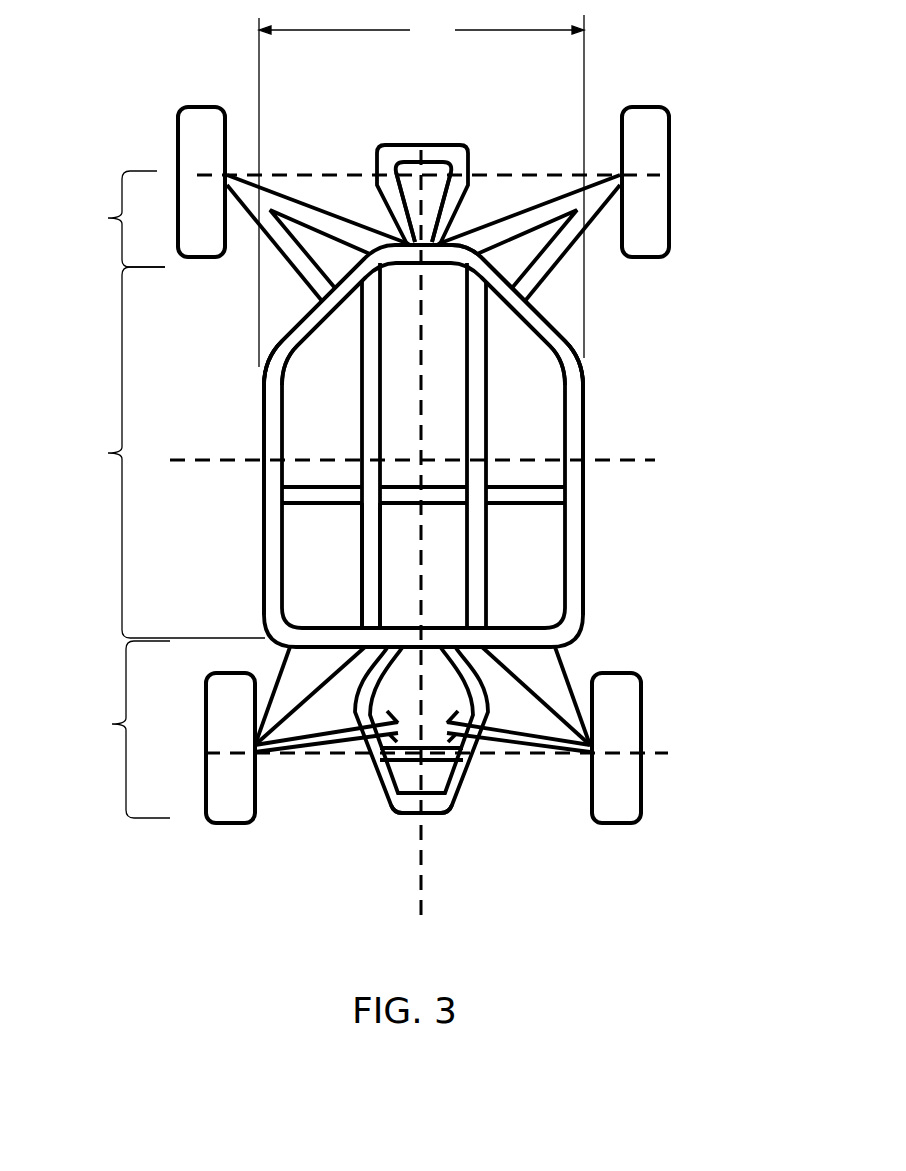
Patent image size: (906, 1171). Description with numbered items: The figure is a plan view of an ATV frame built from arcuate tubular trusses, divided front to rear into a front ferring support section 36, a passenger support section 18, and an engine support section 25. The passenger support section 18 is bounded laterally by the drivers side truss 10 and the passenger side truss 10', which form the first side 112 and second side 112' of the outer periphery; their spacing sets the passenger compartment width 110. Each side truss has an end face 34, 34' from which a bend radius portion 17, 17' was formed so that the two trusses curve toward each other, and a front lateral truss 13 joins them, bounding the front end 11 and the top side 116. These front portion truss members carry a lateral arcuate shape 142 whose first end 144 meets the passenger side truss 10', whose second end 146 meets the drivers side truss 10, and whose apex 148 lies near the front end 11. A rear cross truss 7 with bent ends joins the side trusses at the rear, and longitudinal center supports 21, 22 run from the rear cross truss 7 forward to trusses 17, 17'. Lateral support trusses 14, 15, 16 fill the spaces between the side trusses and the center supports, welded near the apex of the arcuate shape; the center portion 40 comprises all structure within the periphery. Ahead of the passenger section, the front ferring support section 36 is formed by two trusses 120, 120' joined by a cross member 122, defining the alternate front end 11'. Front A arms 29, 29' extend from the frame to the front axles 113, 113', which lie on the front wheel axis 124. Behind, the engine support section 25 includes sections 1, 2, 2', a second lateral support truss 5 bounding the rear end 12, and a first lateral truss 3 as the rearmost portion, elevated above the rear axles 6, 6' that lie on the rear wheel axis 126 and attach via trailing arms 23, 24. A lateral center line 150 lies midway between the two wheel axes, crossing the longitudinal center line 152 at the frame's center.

The passenger compartment width 110 is at (421, 191).
The front wheel axis 124 is at (311, 160).
The cross member 122 is at (432, 163).
The front end 11' is at (456, 150).
The end face 34' is at (474, 152).
The front axle 113 is at (211, 166).
The front axle 113' is at (630, 166).
The end face 34 is at (395, 163).
The front lateral truss 13 is at (417, 197).
The truss 120 is at (306, 202).
The truss 120' is at (541, 207).
The front A arm 29 is at (318, 181).
The front A arm 29' is at (529, 183).
The lateral arcuate shape 142 is at (530, 297).
The truss member 17 is at (292, 321).
The truss member 17' is at (567, 321).
The top side 116 is at (314, 383).
The lateral arcuate shape second end 146 is at (277, 390).
The center portion 40 is at (566, 395).
The lateral arcuate shape first end 144 is at (590, 401).
The drivers side truss 10 is at (391, 446).
The passenger side truss 10' is at (621, 500).
The lateral arcuate shape apex 148 is at (413, 250).
The front end 11 is at (425, 289).
The lateral support truss 14 is at (321, 494).
The lateral support truss 15 is at (440, 498).
The lateral support truss 16 is at (525, 492).
The lateral center line 150 is at (650, 460).
The first side 112 is at (217, 500).
The second side 112' is at (633, 500).
The longitudinal center support 21 is at (367, 563).
The longitudinal center support 22 is at (472, 580).
The rear cross truss 7 is at (438, 648).
The section 1 is at (392, 655).
The rear end 12 is at (436, 640).
The first lateral truss 3 is at (412, 818).
The second lateral support truss 5 is at (434, 762).
The trailing arm 23 is at (290, 685).
The trailing arm 24 is at (542, 668).
The section 2 is at (310, 696).
The section 2' is at (536, 696).
The rear axle 6 is at (326, 777).
The rear axle 6' is at (518, 780).
The rear wheel axis 126 is at (336, 770).
The longitudinal center line 152 is at (430, 918).
The front ferring support section 36 is at (108, 218).
The passenger support section 18 is at (108, 453).
The engine support section 25 is at (112, 724).